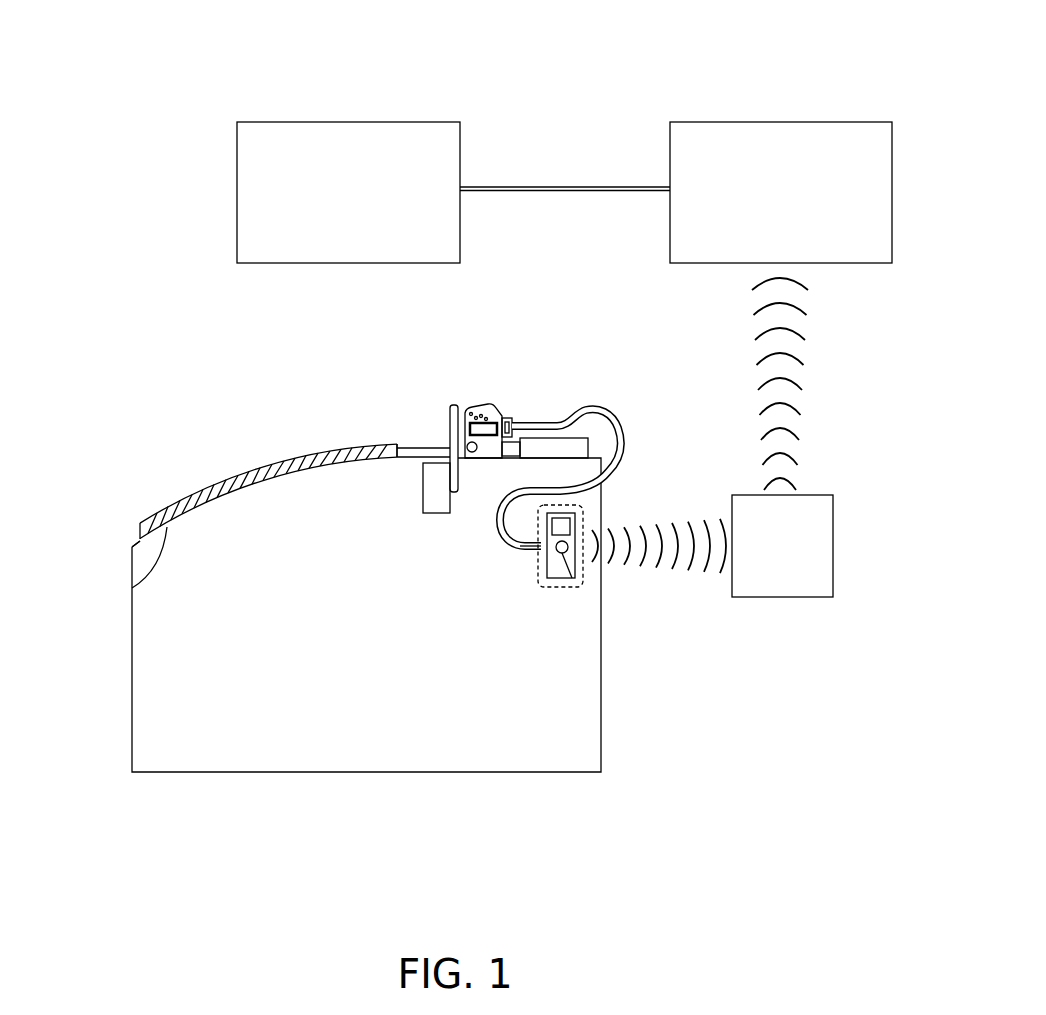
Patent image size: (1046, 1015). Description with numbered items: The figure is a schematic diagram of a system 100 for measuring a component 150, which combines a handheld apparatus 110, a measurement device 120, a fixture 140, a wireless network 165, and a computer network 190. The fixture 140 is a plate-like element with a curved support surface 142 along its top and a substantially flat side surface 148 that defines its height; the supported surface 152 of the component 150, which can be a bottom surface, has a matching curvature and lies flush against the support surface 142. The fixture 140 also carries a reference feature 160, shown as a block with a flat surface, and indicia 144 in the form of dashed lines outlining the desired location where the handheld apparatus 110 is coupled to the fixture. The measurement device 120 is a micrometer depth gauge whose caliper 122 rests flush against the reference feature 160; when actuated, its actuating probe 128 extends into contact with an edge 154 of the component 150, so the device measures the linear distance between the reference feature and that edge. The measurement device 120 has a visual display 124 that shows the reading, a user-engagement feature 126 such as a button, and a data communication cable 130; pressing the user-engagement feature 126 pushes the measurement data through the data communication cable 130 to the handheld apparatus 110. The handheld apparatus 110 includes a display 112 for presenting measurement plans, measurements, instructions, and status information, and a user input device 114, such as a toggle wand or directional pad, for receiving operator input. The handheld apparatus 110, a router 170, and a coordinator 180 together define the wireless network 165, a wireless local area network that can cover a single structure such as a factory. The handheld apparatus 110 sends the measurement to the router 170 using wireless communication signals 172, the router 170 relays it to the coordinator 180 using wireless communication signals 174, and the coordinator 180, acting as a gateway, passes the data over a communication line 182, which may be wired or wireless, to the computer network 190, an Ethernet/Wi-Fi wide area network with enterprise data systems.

The system 100 is at (642, 62).
The handheld apparatus 110 is at (546, 583).
The display 112 is at (573, 526).
The user input device 114 is at (572, 578).
The measurement device 120 is at (493, 397).
The caliper 122 is at (453, 406).
The visual display 124 is at (489, 433).
The user-engagement feature 126 is at (511, 418).
The actuating probe 128 is at (422, 448).
The data communication cable 130 is at (630, 421).
The fixture 140 is at (342, 681).
The support surface 142 is at (135, 545).
The indicia 144 is at (539, 558).
The side surface 148 is at (158, 687).
The component 150 is at (255, 468).
The supported surface 152 is at (132, 587).
The edge 154 is at (400, 443).
The reference feature 160 is at (425, 496).
The wireless network 165 is at (858, 528).
The router 170 is at (767, 568).
The wireless communication signals 172 is at (672, 577).
The wireless communication signals 174 is at (840, 372).
The coordinator 180 is at (765, 213).
The communication line 182 is at (560, 187).
The computer network 190 is at (333, 212).